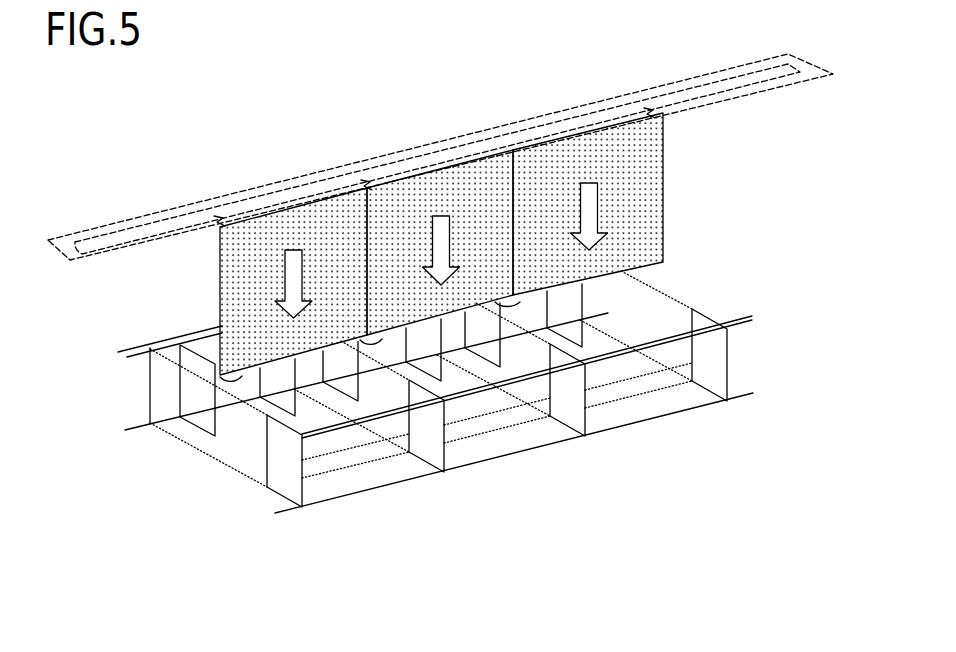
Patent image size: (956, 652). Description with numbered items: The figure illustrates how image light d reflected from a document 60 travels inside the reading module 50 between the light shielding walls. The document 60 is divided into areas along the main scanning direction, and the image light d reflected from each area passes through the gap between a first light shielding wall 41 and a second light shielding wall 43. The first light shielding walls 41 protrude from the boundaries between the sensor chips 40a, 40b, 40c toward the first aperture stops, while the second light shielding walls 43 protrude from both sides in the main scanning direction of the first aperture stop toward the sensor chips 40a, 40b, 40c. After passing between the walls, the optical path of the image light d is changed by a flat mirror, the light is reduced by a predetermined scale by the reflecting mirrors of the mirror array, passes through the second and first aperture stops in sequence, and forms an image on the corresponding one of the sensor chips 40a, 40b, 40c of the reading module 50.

The document 60 is at (786, 79).
The image light d is at (663, 177).
The reading module 50 is at (747, 254).
The second light shielding wall 43 is at (200, 360).
The first light shielding wall 41 is at (302, 482).
The sensor chip 40a is at (387, 470).
The sensor chip 40b is at (525, 438).
The sensor chip 40c is at (662, 403).